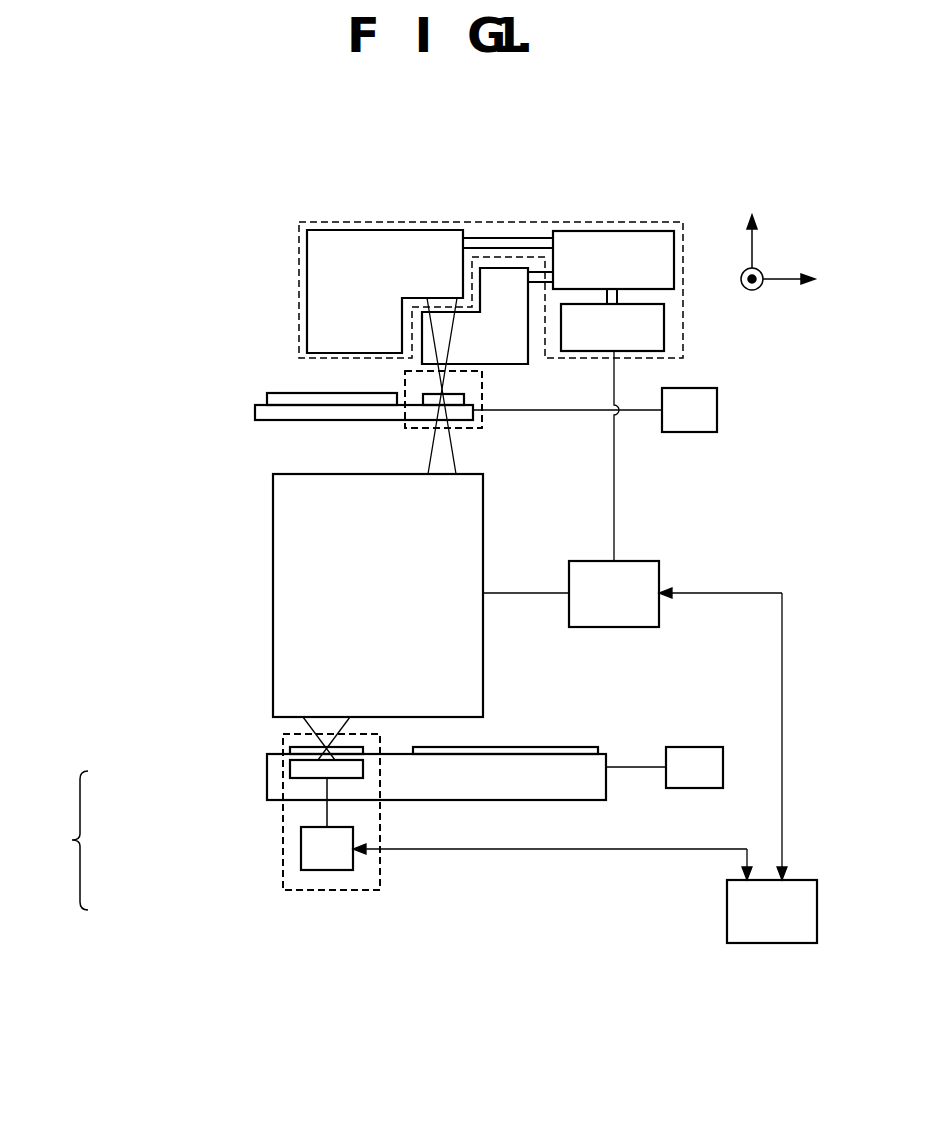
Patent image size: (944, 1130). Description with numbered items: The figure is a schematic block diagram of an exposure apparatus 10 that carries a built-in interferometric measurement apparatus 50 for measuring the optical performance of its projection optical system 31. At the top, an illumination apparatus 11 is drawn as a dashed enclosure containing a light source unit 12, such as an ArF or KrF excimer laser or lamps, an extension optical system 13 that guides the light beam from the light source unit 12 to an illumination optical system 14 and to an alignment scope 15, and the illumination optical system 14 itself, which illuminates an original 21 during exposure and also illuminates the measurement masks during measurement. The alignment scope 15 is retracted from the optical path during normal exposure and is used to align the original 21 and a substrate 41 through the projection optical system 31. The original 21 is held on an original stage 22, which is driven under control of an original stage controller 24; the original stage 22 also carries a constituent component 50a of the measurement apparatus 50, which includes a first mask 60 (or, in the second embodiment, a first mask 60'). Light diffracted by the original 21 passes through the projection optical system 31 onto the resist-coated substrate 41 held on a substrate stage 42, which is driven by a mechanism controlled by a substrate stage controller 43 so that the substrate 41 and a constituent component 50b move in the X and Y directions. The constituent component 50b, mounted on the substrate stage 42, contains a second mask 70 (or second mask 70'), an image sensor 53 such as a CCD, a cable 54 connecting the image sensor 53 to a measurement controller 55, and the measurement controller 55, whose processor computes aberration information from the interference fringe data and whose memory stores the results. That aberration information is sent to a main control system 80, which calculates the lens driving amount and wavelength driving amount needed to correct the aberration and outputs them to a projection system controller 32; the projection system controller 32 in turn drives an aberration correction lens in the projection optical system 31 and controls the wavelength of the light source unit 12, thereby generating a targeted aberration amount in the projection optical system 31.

The exposure apparatus 10 is at (145, 256).
The illumination apparatus 11 is at (444, 222).
The light source unit 12 is at (651, 327).
The extension optical system 13 is at (616, 247).
The illumination optical system 14 is at (327, 276).
The alignment scope 15 is at (485, 345).
The original 21 is at (273, 400).
The original stage 22 is at (255, 410).
The original stage controller 24 is at (697, 408).
The projection optical system 31 is at (273, 605).
The projection system controller 32 is at (630, 561).
The substrate 41 is at (490, 752).
The substrate stage 42 is at (550, 773).
The substrate stage controller 43 is at (693, 763).
The measurement apparatus 50 is at (262, 640).
The constituent component 50a is at (405, 428).
The constituent component 50b is at (283, 873).
The image sensor 53 is at (300, 768).
The cable 54 is at (323, 813).
The measurement controller 55 is at (328, 850).
The first mask 60 is at (504, 411).
The first mask 60' is at (443, 399).
The second mask 70 is at (267, 784).
The second mask 70' is at (331, 812).
The main control system 80 is at (772, 912).